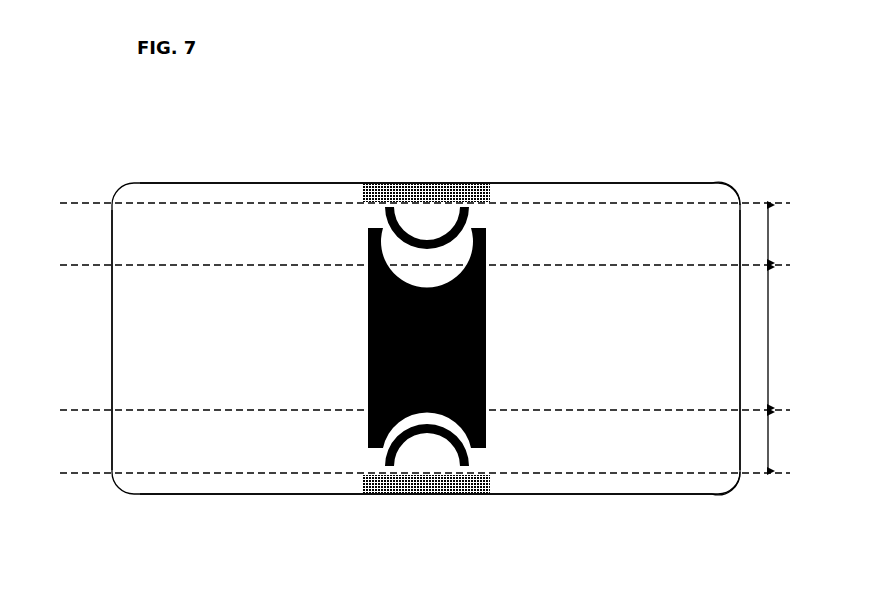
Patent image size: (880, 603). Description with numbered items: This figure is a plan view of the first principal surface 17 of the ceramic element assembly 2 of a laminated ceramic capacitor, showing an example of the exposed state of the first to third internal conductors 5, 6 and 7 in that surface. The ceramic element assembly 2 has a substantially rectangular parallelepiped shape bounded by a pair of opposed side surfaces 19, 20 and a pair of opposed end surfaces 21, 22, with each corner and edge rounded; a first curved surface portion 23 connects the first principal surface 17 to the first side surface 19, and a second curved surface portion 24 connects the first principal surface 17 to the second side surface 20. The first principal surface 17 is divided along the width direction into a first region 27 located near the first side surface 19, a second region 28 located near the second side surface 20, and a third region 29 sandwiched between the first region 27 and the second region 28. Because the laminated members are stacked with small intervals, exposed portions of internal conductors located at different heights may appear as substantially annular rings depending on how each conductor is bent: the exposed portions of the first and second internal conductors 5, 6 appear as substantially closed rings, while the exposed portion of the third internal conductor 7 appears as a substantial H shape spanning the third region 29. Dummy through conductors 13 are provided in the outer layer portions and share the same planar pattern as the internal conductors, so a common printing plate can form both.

The ceramic element assembly 2 is at (159, 116).
The first internal conductor 5 is at (388, 222).
The second internal conductor 6 is at (388, 458).
The third internal conductor 7 is at (485, 305).
The dummy through conductor 13 is at (437, 190).
The first principal surface 17 is at (272, 285).
The first side surface 19 is at (570, 181).
The second side surface 20 is at (603, 494).
The first end surface 21 is at (111, 328).
The second end surface 22 is at (740, 390).
The first curved surface portion 23 is at (705, 192).
The second curved surface portion 24 is at (718, 487).
The first region 27 is at (430, 233).
The second region 28 is at (432, 441).
The third region 29 is at (430, 336).